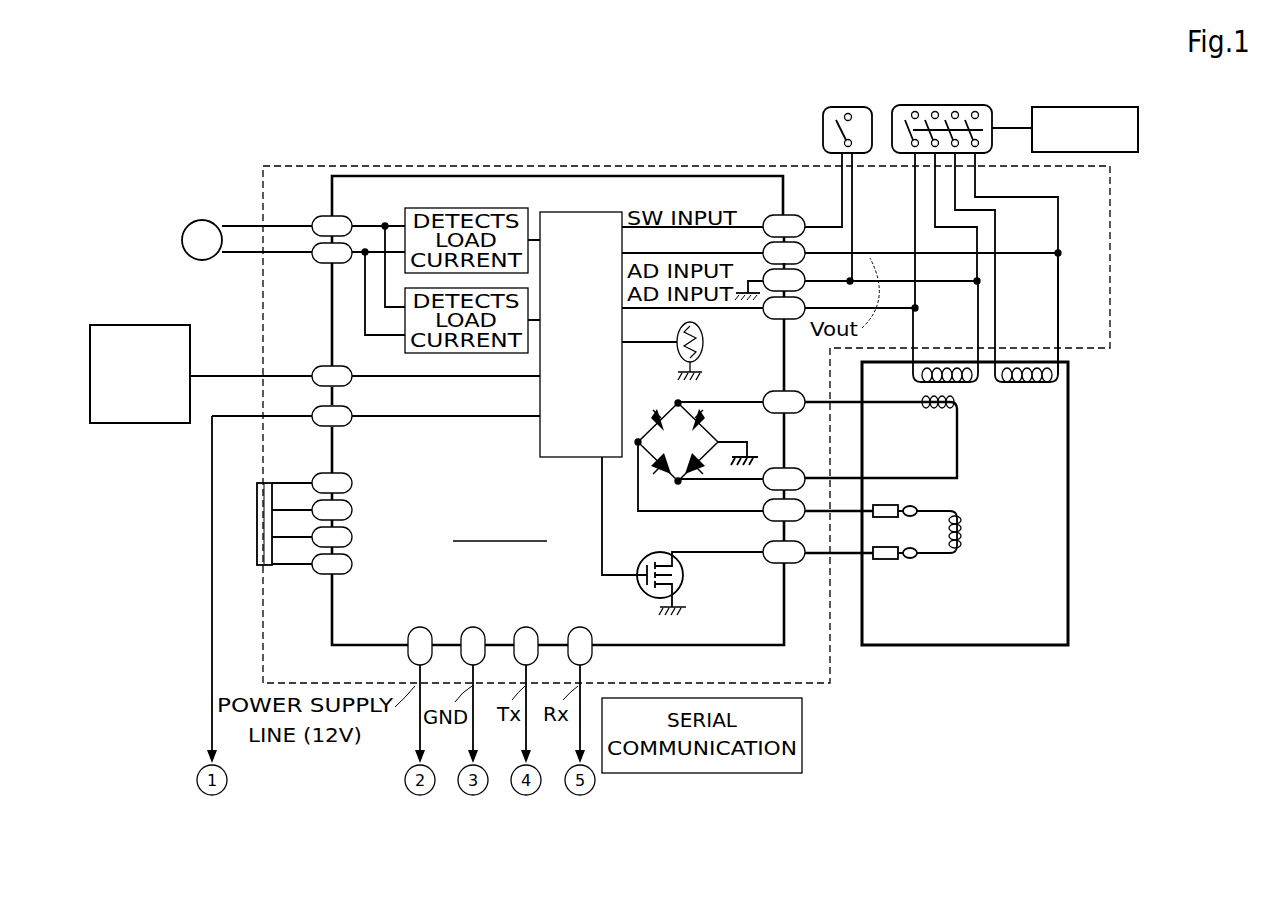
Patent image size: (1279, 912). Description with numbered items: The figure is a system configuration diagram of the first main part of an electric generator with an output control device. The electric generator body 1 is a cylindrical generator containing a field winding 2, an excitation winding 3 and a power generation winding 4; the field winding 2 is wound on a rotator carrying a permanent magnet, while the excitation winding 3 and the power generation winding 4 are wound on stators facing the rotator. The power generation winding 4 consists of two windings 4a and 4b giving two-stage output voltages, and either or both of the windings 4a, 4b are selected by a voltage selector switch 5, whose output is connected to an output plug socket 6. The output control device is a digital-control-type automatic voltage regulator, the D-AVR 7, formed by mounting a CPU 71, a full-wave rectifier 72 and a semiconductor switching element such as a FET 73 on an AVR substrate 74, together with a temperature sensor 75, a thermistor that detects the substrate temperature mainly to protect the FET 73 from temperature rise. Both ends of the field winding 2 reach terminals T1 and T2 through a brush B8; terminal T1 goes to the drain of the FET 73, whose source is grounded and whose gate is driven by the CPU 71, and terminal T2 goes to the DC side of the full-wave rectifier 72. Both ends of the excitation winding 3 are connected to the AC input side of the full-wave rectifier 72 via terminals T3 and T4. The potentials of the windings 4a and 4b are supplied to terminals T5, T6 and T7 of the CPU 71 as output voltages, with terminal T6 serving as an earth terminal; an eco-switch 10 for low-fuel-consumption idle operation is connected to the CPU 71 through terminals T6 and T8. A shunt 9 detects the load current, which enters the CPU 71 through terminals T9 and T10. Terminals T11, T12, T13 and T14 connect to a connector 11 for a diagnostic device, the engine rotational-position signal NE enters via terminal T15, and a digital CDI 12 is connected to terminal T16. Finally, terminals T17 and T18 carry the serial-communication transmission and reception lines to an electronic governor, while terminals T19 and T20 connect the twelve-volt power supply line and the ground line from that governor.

The electric generator body 1 is at (1068, 548).
The field winding 2 is at (963, 537).
The excitation winding 3 is at (936, 412).
The power generation winding 4 is at (1018, 344).
The power generation winding 4a is at (955, 386).
The power generation winding 4b is at (1010, 386).
The voltage selector switch 5 is at (975, 105).
The output plug socket 6 is at (1100, 107).
The digital-control-type automatic voltage regulator (D-AVR) 7 is at (818, 690).
The shunt 9 is at (208, 258).
The eco-switch 10 is at (855, 107).
The connector 11 is at (256, 556).
The digital CDI 12 is at (145, 325).
The CPU 71 is at (570, 458).
The full-wave rectifier 72 is at (708, 428).
The semiconductor switching element (FET) 73 is at (684, 580).
The AVR substrate 74 is at (703, 176).
The temperature sensor 75 is at (704, 346).
The brush B8 is at (885, 518).
The terminal T1 is at (765, 562).
The terminal T2 is at (765, 520).
The terminal T3 is at (801, 469).
The terminal T4 is at (800, 392).
The terminal T5 is at (803, 301).
The terminal T6 is at (803, 273).
The terminal T7 is at (812, 240).
The terminal T8 is at (790, 216).
The terminal T9 is at (318, 218).
The terminal T10 is at (318, 262).
The terminal T11 is at (352, 477).
The terminal T12 is at (352, 504).
The terminal T13 is at (352, 531).
The terminal T14 is at (352, 559).
The terminal T15 is at (318, 427).
The terminal T16 is at (318, 367).
The terminal T17 is at (524, 627).
The terminal T18 is at (581, 627).
The terminal T19 is at (416, 627).
The terminal T20 is at (470, 627).